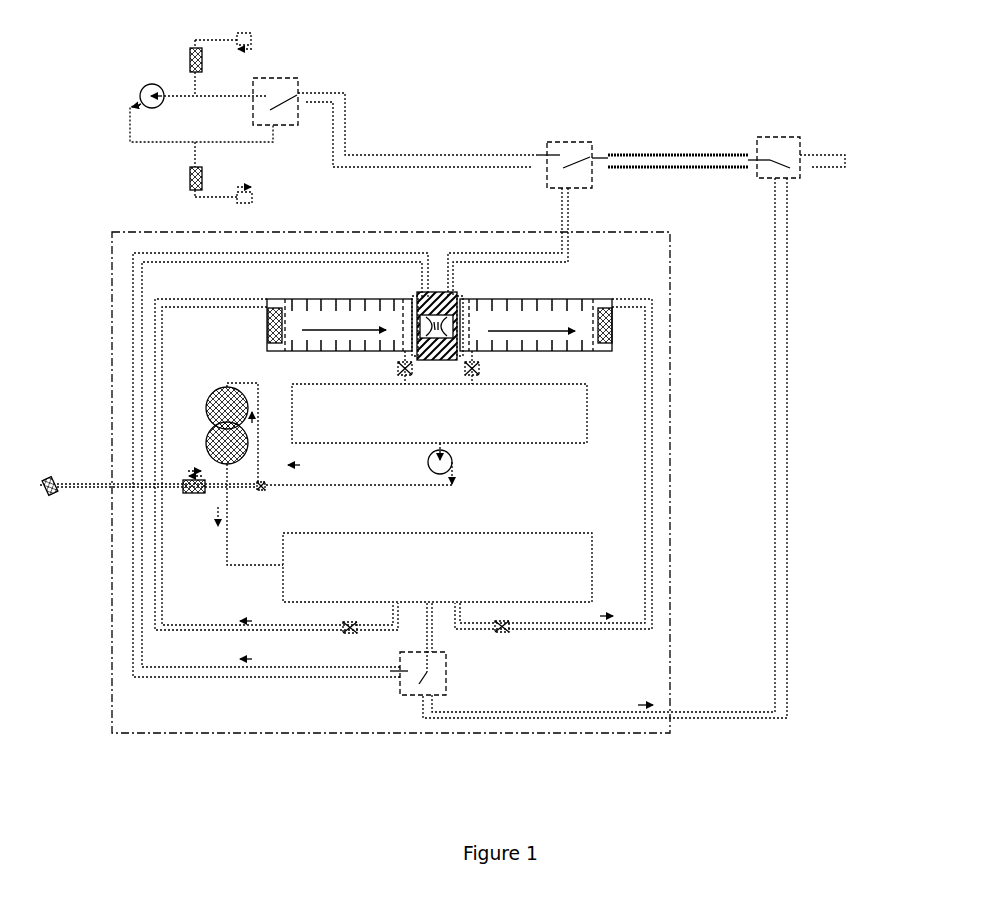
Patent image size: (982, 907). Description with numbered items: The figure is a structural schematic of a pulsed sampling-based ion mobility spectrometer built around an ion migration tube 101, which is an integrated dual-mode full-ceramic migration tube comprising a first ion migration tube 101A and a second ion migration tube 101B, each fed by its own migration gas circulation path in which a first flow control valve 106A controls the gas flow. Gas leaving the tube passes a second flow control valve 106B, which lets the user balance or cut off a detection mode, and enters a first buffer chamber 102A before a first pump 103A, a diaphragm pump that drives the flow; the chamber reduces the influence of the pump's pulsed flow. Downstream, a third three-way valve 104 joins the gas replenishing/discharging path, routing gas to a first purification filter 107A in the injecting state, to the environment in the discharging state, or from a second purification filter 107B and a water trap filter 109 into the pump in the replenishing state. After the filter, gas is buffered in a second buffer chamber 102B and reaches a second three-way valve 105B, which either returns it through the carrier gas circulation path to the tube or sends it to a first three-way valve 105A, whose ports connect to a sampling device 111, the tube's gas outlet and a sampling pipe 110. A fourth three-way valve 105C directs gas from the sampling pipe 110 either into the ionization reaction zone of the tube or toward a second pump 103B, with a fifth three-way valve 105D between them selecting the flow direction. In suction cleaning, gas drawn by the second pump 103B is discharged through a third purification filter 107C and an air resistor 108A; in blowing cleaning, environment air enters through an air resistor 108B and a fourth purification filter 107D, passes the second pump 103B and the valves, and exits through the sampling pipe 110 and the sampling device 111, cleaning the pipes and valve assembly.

The ion migration tube 101 is at (451, 310).
The first ion migration tube 101A is at (561, 305).
The second ion migration tube 101B is at (339, 310).
The first buffer chamber 102A is at (467, 433).
The second buffer chamber 102B is at (457, 552).
The first pump 103A is at (409, 475).
The second pump 103B is at (169, 101).
The third three-way valve 104 is at (299, 503).
The first three-way valve 105A is at (778, 137).
The second three-way valve 105B is at (384, 664).
The fourth three-way valve 105C is at (567, 142).
The fifth three-way valve 105D is at (280, 78).
The first flow control valve 106A is at (512, 660).
The second flow control valve 106B is at (398, 369).
The first purification filter 107A is at (224, 453).
The second purification filter 107B is at (214, 538).
The third purification filter 107C is at (190, 182).
The fourth purification filter 107D is at (159, 62).
The air resistor 108A is at (253, 200).
The air resistor 108B is at (212, 28).
The water trap filter 109 is at (148, 504).
The sampling pipe 110 is at (678, 139).
The sampling device 111 is at (818, 168).